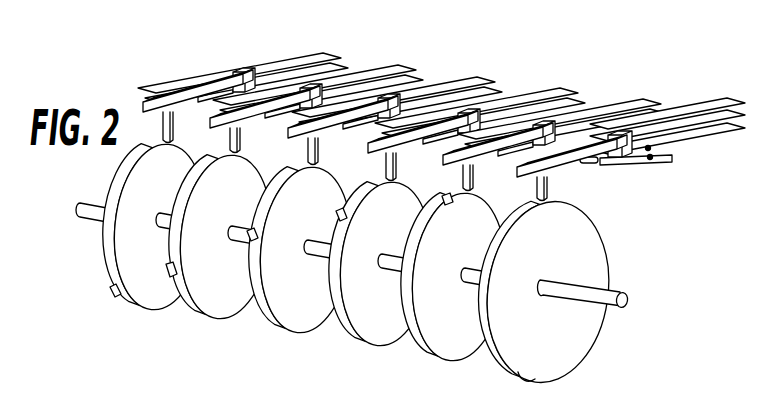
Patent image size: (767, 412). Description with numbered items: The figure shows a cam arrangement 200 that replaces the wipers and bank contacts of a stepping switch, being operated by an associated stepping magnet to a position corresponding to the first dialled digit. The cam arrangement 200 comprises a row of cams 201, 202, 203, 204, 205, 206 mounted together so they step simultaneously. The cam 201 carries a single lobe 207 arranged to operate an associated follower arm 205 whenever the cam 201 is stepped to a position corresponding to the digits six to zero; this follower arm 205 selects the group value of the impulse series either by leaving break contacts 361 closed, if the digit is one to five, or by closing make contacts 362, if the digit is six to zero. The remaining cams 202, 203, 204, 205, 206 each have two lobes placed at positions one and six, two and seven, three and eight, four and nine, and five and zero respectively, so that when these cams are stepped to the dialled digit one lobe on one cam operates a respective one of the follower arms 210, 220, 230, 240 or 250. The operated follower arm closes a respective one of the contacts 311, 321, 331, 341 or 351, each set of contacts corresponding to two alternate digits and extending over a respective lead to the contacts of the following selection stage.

The cam arrangement 200 is at (222, 367).
The cam 201 is at (530, 353).
The cam 202 is at (450, 343).
The cam 203 is at (370, 335).
The cam 204 is at (297, 322).
The follower arm 205 is at (548, 196).
The cam 206 is at (150, 298).
The lobe 207 is at (563, 362).
The follower arm 210 is at (470, 190).
The follower arm 220 is at (392, 180).
The follower arm 230 is at (317, 167).
The follower arm 240 is at (240, 154).
The follower arm 250 is at (171, 143).
The contacts 311 is at (562, 143).
The contacts 321 is at (490, 122).
The contacts 331 is at (408, 110).
The contacts 341 is at (340, 92).
The contacts 351 is at (268, 97).
The break contacts 361 is at (656, 144).
The make contacts 362 is at (655, 158).